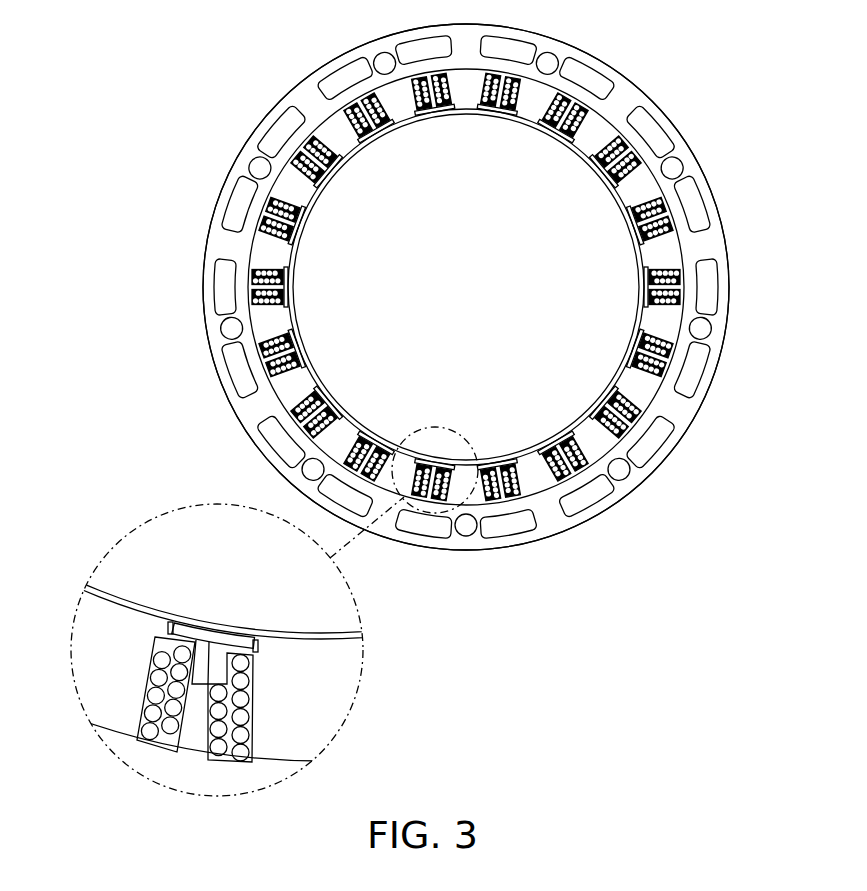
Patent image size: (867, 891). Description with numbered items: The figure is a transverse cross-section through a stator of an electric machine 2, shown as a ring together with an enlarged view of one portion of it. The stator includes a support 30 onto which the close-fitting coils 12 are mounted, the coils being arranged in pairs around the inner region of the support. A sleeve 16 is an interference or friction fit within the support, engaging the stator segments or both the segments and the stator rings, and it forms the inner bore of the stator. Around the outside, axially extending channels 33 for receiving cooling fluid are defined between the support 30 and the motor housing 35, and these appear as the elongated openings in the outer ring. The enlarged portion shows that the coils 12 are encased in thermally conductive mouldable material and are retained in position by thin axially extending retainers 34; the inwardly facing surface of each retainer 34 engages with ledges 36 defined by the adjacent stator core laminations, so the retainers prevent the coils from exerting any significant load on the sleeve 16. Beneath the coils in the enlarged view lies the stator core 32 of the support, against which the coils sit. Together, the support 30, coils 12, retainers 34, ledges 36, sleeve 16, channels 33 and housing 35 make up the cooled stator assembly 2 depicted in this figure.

The electric motor stator assembly 2 is at (645, 73).
The coil 12 is at (316, 150).
The sleeve 16 is at (622, 195).
The support 30 is at (690, 246).
The back iron / yoke 32 is at (242, 757).
The channel 33 is at (710, 287).
The retainer 34 is at (208, 635).
The motor housing 35 is at (683, 418).
The ledge 36 is at (172, 628).